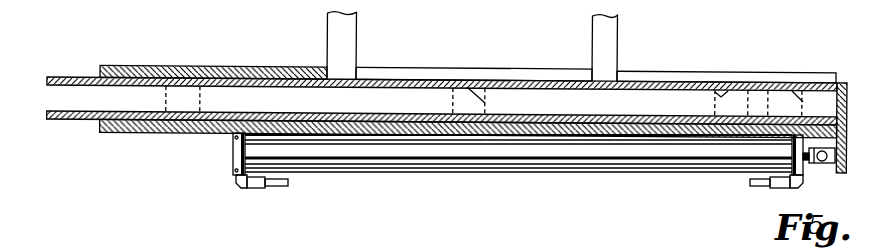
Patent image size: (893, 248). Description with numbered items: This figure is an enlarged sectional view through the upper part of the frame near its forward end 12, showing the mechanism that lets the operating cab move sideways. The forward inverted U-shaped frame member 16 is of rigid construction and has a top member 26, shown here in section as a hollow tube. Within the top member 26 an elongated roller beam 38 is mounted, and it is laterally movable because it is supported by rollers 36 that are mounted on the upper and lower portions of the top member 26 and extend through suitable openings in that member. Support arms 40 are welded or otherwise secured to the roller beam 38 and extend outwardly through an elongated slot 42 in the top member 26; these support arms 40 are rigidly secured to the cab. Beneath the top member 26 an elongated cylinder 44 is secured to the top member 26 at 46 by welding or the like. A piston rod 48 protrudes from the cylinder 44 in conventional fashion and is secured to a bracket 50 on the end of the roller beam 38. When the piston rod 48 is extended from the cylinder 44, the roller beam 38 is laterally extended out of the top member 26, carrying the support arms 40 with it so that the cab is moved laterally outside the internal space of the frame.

The forward end of frame 12 is at (205, 65).
The forward inverted U-shaped frame member 16 is at (225, 33).
The top member 26 is at (182, 67).
The rollers 36 is at (203, 132).
The roller beam 38 is at (525, 80).
The support arms 40 is at (345, 50).
The elongated slot 42 is at (675, 77).
The cylinder 44 is at (236, 180).
The cylinder attachment point 46 is at (233, 160).
The piston rod 48 is at (803, 174).
The bracket 50 is at (848, 88).